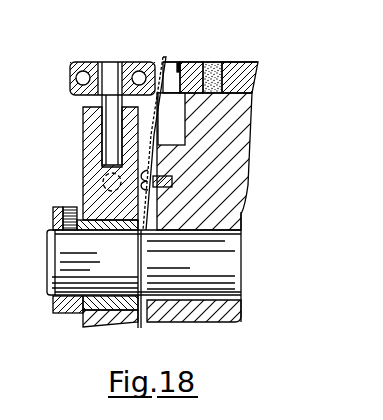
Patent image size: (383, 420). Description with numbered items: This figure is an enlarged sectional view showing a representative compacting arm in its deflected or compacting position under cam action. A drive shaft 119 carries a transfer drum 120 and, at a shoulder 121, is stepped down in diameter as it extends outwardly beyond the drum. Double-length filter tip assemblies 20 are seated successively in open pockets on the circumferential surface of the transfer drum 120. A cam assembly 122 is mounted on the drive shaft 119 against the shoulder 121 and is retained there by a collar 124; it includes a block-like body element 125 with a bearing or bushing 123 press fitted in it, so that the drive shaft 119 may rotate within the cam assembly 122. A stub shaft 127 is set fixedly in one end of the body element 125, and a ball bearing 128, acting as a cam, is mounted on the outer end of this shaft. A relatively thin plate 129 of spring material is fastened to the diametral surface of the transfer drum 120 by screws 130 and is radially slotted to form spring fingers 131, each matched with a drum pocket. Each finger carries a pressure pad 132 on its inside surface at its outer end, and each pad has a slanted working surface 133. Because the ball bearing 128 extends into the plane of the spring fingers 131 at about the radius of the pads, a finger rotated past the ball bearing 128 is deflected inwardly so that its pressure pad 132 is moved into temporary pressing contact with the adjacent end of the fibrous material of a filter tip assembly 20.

The double-length filter tip assembly 20 is at (257, 69).
The drive shaft 119 is at (237, 262).
The transfer drum 120 is at (247, 156).
The shoulder 121 is at (140, 263).
The cam assembly 122 is at (86, 182).
The bearing or bushing 123 is at (100, 232).
The collar 124 is at (60, 208).
The body element 125 is at (90, 173).
The stub shaft 127 is at (114, 62).
The ball bearing 128 is at (87, 62).
The plate 129 is at (174, 119).
The screws 130 is at (168, 183).
The spring fingers 131 is at (164, 57).
The pressure pad 132 is at (171, 88).
The working surface 133 is at (187, 63).